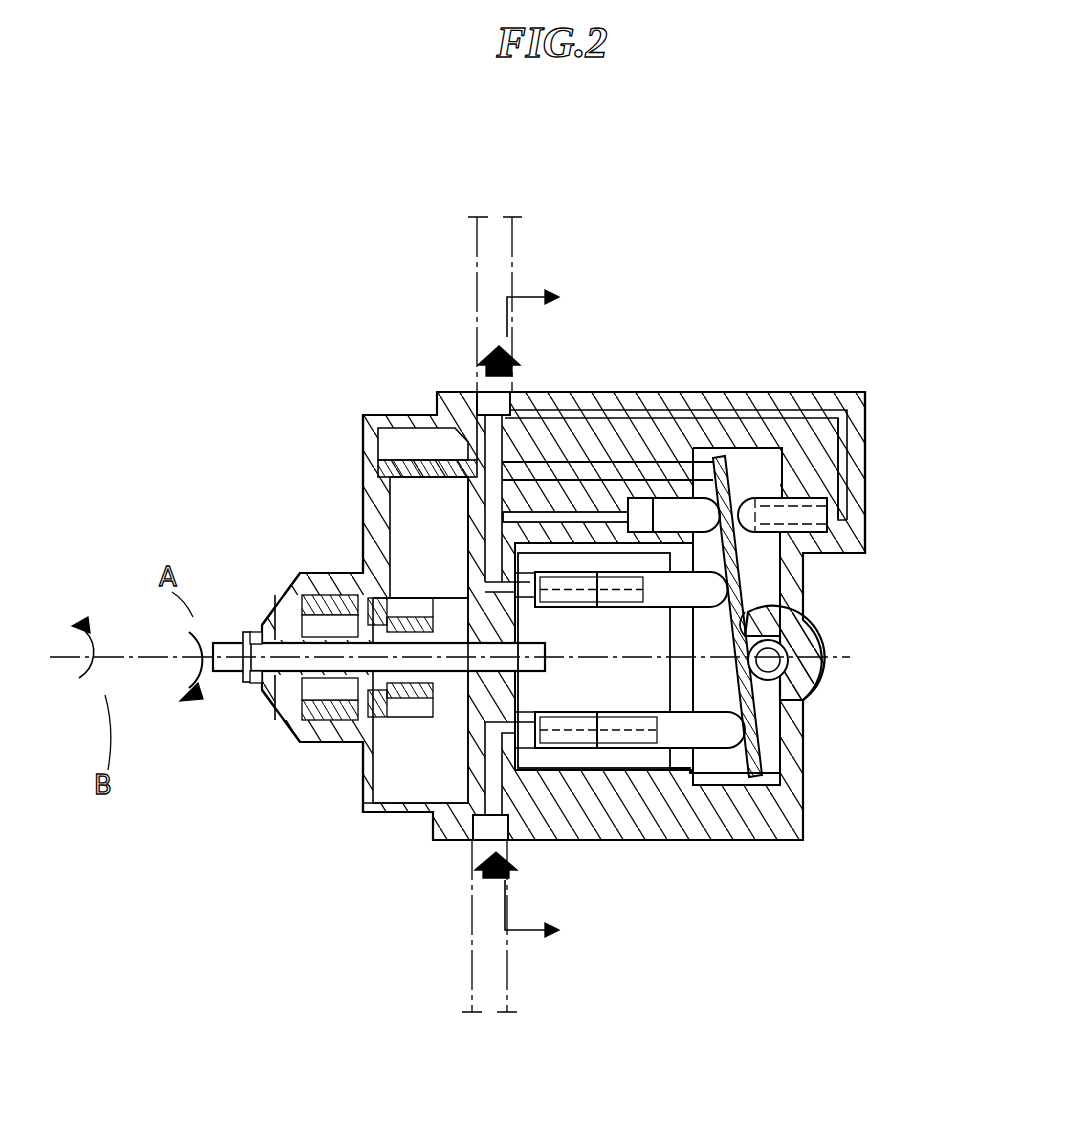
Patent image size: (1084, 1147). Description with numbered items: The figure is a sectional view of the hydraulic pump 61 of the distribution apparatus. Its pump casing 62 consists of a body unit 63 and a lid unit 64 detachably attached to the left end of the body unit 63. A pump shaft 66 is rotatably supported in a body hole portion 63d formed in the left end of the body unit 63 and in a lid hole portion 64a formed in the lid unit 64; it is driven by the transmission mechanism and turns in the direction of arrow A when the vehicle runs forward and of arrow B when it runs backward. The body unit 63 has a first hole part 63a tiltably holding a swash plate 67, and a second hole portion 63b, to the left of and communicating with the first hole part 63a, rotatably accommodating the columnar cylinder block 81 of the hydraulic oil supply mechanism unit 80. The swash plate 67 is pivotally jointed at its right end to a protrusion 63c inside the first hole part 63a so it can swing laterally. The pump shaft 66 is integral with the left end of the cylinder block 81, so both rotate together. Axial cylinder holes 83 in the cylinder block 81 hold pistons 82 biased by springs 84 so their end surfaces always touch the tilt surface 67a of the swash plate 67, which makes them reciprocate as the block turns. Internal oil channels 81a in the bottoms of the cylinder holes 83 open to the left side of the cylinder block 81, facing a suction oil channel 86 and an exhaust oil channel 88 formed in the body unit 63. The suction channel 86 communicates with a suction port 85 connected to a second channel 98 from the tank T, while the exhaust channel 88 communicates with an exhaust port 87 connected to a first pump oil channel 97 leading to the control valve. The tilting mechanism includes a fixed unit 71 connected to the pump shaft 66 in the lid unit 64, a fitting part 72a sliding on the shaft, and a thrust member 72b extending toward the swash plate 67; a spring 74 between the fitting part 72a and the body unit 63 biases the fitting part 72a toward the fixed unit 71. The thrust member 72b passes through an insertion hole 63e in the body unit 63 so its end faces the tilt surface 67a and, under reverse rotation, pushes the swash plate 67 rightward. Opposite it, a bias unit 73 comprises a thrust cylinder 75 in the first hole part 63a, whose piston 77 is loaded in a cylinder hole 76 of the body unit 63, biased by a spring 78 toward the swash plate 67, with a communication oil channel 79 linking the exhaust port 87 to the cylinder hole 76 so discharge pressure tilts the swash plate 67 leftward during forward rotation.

The hydraulic pump 61 is at (832, 324).
The pump casing 62 is at (668, 387).
The body unit 63 is at (724, 398).
The first hole part 63a is at (836, 396).
The second hole portion 63b is at (654, 766).
The protrusion 63c is at (818, 642).
The body hole portion 63d is at (452, 612).
The insertion hole 63e is at (629, 460).
The lid unit 64 is at (402, 415).
The lid hole portion 64a is at (244, 632).
The pump shaft 66 is at (256, 664).
The swash plate 67 is at (805, 712).
The tilt surface 67a is at (732, 674).
The fixed unit 71 is at (340, 595).
The fitting part 72a is at (341, 740).
The thrust member 72b is at (378, 463).
The bias unit 73 is at (808, 558).
The spring 74 is at (416, 690).
The thrust cylinder 75 is at (780, 489).
The cylinder hole 76 is at (828, 518).
The piston 77 is at (758, 560).
The spring 78 is at (850, 556).
The communication oil channel 79 is at (790, 418).
The hydraulic oil supply mechanism unit 80 is at (625, 765).
The cylinder block 81 is at (580, 757).
The internal oil channel 81a is at (531, 728).
The piston 82 is at (765, 882).
The cylinder hole 83 is at (573, 590).
The spring 84 is at (585, 580).
The suction port 85 is at (483, 840).
The suction oil channel 86 is at (500, 728).
The exhaust port 87 is at (530, 392).
The exhaust oil channel 88 is at (467, 537).
The first pump oil channel 97 is at (512, 240).
The second channel 98 is at (471, 990).